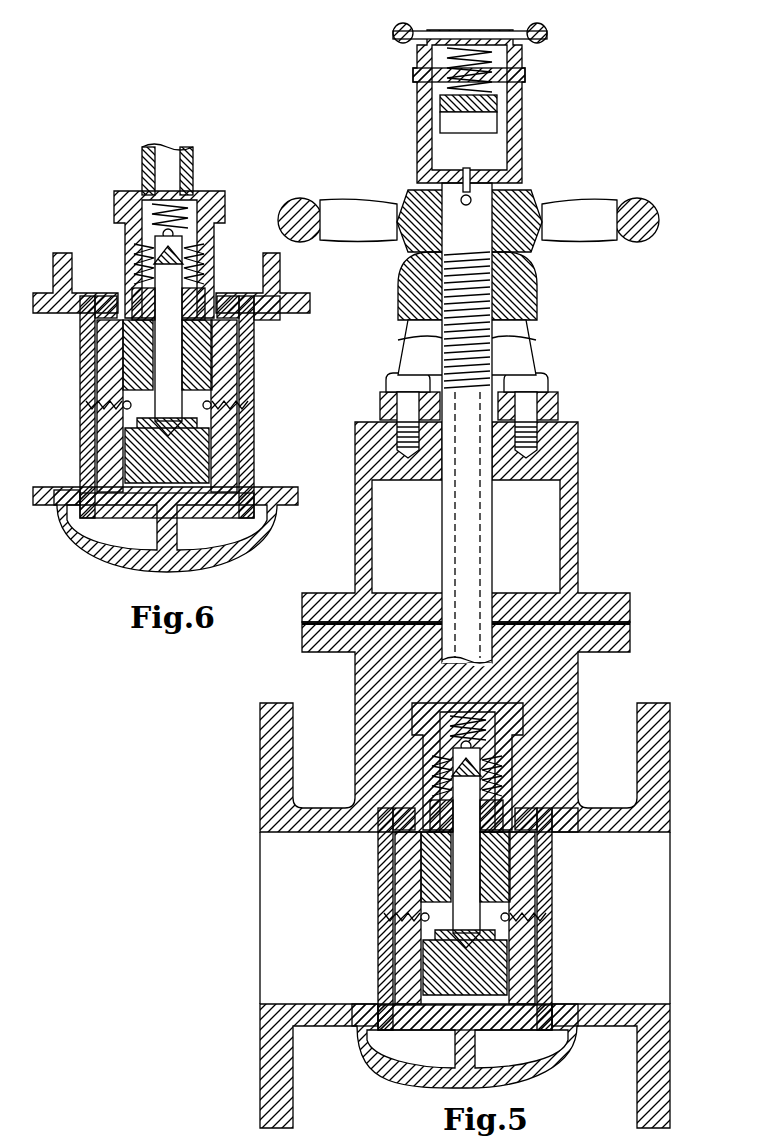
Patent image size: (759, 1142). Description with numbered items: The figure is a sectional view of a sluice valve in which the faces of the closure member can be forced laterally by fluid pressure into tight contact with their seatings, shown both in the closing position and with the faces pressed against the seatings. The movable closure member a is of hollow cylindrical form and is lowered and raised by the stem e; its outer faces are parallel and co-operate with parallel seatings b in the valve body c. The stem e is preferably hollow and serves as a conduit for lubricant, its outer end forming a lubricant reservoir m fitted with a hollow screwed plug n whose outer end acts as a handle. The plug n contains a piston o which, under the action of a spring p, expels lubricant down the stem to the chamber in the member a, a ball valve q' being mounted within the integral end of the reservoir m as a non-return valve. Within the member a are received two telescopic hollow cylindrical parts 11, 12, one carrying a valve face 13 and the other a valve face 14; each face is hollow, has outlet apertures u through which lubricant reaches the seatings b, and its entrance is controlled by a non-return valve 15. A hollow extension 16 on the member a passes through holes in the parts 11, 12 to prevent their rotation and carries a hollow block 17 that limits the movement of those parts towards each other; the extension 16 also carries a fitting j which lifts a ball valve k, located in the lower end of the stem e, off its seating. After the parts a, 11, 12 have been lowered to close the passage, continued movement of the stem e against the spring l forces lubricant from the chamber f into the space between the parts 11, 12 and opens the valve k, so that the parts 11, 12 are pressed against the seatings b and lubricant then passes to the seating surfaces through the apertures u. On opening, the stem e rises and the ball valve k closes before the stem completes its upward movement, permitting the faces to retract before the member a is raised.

In FIG. 5, the spring p is at (452, 56).
In FIG. 5, the hollow screwed plug n is at (525, 78).
In FIG. 5, the piston o is at (452, 100).
In FIG. 5, the lubricant reservoir m is at (496, 155).
In FIG. 5, the ball valve q' is at (468, 282).
In FIG. 5, the stem e is at (444, 634).
In FIG. 6, the stem e is at (192, 154).
In FIG. 5, the ball valve k is at (503, 744).
In FIG. 6, the ball valve k is at (177, 254).
In FIG. 5, the chamber f is at (482, 770).
In FIG. 6, the chamber f is at (194, 262).
In FIG. 5, the fitting j is at (430, 762).
In FIG. 6, the fitting j is at (181, 257).
In FIG. 5, the spring l is at (440, 780).
In FIG. 6, the spring l is at (150, 276).
In FIG. 5, the outlet apertures u is at (394, 808).
In FIG. 6, the outlet apertures u is at (165, 417).
In FIG. 5, the telescopic hollow cylindrical part 11 is at (420, 853).
In FIG. 6, the telescopic hollow cylindrical part 11 is at (120, 431).
In FIG. 5, the telescopic hollow cylindrical part 12 is at (515, 808).
In FIG. 6, the telescopic hollow cylindrical part 12 is at (214, 431).
In FIG. 5, the valve face 13 is at (379, 898).
In FIG. 6, the valve face 13 is at (145, 407).
In FIG. 5, the valve face 14 is at (549, 887).
In FIG. 6, the valve face 14 is at (266, 407).
In FIG. 5, the non-return valve 15 is at (420, 918).
In FIG. 6, the non-return valve 15 is at (167, 419).
In FIG. 5, the hollow extension 16 is at (508, 852).
In FIG. 6, the hollow extension 16 is at (205, 355).
In FIG. 5, the hollow block 17 is at (445, 958).
In FIG. 6, the hollow block 17 is at (123, 450).
In FIG. 5, the closure member a is at (512, 1030).
In FIG. 6, the closure member a is at (95, 293).
In FIG. 5, the seatings b is at (575, 812).
In FIG. 6, the seatings b is at (257, 312).
In FIG. 5, the valve body c is at (328, 812).
In FIG. 6, the valve body c is at (281, 495).